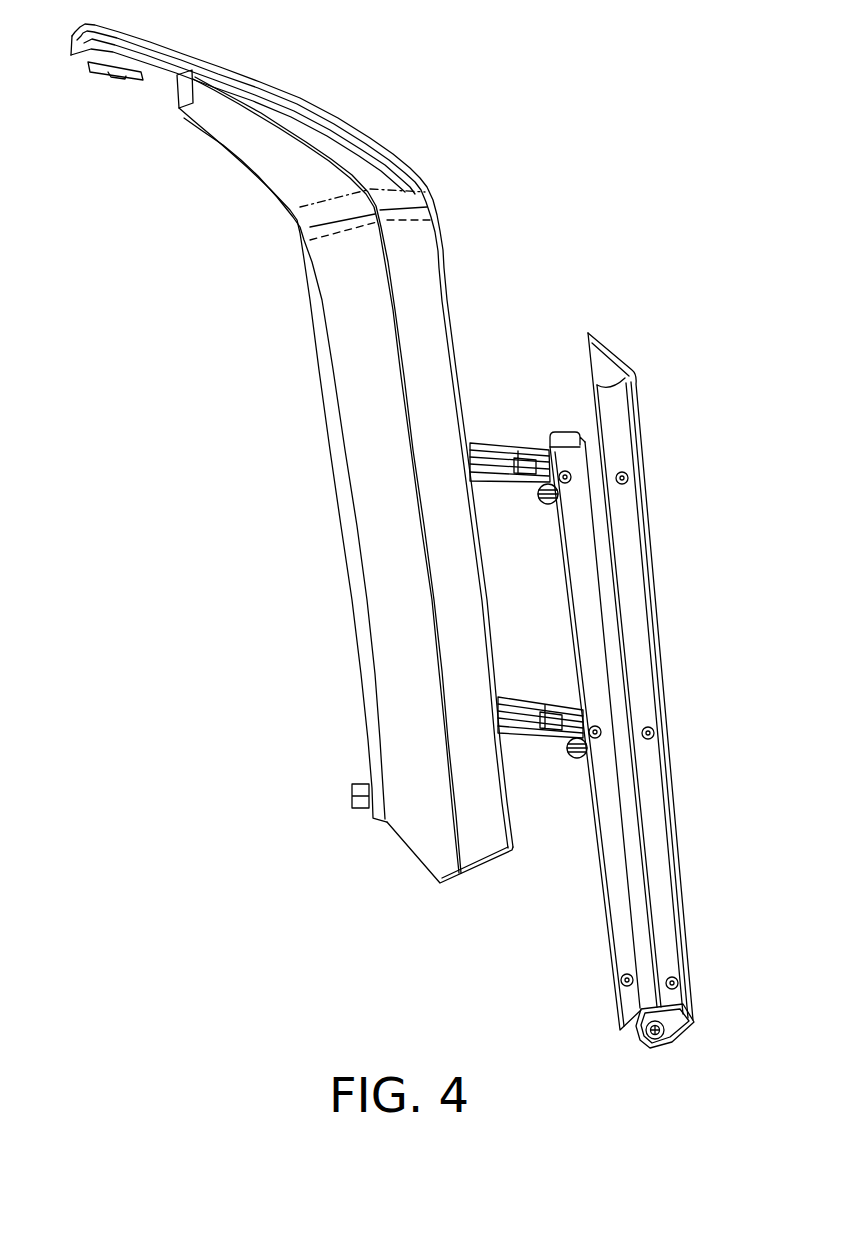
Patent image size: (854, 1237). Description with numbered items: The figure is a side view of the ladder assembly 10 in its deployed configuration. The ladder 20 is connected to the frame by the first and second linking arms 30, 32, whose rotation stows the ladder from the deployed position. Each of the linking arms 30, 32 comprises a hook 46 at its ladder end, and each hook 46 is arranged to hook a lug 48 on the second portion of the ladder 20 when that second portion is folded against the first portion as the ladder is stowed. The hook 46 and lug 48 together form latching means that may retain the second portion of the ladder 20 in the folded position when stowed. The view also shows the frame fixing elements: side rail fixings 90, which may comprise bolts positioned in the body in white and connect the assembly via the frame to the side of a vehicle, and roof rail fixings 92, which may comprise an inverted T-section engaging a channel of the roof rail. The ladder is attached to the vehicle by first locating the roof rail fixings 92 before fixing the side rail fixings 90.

The ladder assembly 10 is at (598, 209).
The ladder 20 is at (682, 1043).
The first linking arm 30 is at (497, 443).
The second linking arm 32 is at (530, 737).
The hook 46 is at (542, 506).
The lug 48 is at (636, 473).
The side rail fixing 90 is at (352, 788).
The roof rail fixing 92 is at (103, 77).